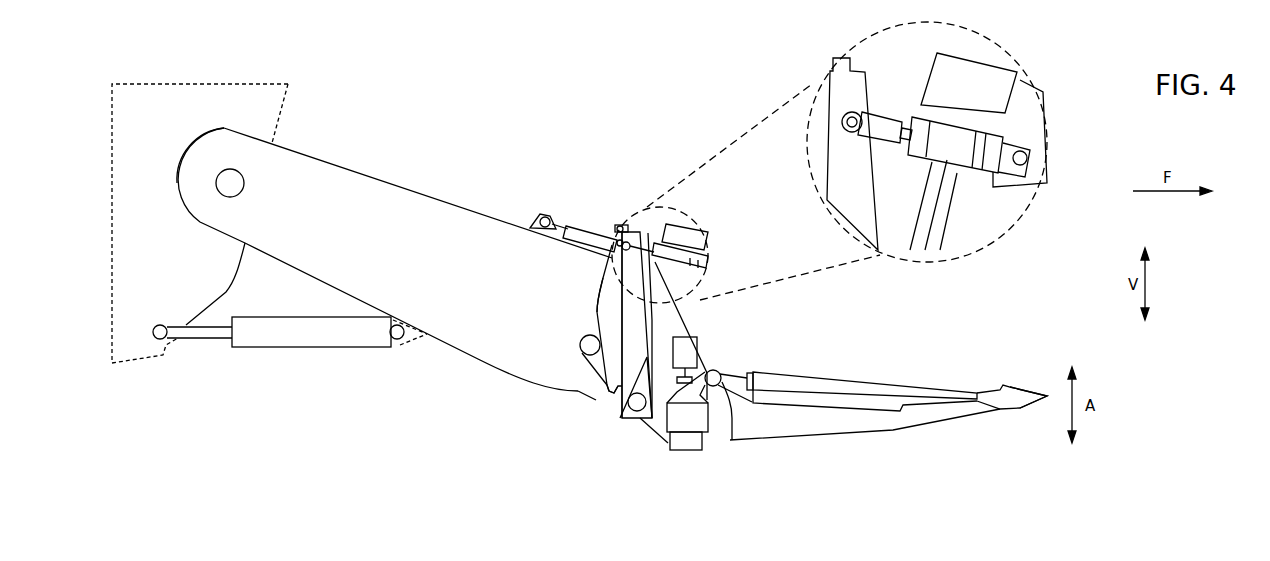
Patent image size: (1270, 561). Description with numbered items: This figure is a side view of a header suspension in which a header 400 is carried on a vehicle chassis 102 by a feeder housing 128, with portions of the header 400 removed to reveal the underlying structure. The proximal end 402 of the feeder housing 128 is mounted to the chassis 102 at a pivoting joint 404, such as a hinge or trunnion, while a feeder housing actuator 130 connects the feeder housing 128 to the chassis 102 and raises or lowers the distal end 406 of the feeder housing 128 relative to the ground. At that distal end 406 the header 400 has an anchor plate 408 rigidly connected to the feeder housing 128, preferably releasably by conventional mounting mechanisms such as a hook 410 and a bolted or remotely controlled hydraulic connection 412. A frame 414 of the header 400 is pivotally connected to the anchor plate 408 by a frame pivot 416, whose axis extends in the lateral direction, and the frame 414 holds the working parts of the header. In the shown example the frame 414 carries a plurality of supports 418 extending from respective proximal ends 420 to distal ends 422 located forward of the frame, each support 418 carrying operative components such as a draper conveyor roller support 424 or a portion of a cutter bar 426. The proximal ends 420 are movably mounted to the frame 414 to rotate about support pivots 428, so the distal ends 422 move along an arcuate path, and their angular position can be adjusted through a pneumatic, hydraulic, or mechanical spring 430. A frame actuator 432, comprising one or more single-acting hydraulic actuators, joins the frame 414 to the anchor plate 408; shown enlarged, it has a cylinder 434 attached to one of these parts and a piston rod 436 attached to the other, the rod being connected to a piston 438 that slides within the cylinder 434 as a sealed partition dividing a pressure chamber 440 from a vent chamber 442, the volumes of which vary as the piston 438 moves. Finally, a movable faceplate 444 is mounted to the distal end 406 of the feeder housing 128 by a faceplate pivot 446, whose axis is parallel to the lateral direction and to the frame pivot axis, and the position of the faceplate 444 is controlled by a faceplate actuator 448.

The vehicle chassis 102 is at (262, 105).
The feeder housing 128 is at (437, 228).
The feeder housing actuator 130 is at (297, 337).
The header 400 is at (988, 372).
The proximal end 402 is at (218, 143).
The pivoting joint 404 is at (244, 183).
The distal end 406 is at (590, 305).
The anchor plate 408 is at (623, 420).
The hook 410 is at (605, 400).
The hydraulic connection 412 is at (628, 225).
The frame 414 is at (707, 318).
The frame pivot 416 is at (638, 412).
The support 418 is at (797, 425).
The proximal end 420 is at (736, 420).
The distal end 422 is at (977, 403).
The draper conveyor roller support 424 is at (885, 392).
The cutter bar 426 is at (1020, 403).
The support pivot 428 is at (722, 372).
The spring 430 is at (697, 345).
The frame actuator 432 is at (657, 252).
The cylinder 434 is at (980, 178).
The piston rod 436 is at (930, 135).
The piston 438 is at (990, 188).
The pressure chamber 440 is at (922, 245).
The vent chamber 442 is at (1030, 160).
The movable faceplate 444 is at (587, 323).
The faceplate pivot 446 is at (590, 355).
The faceplate actuator 448 is at (588, 237).